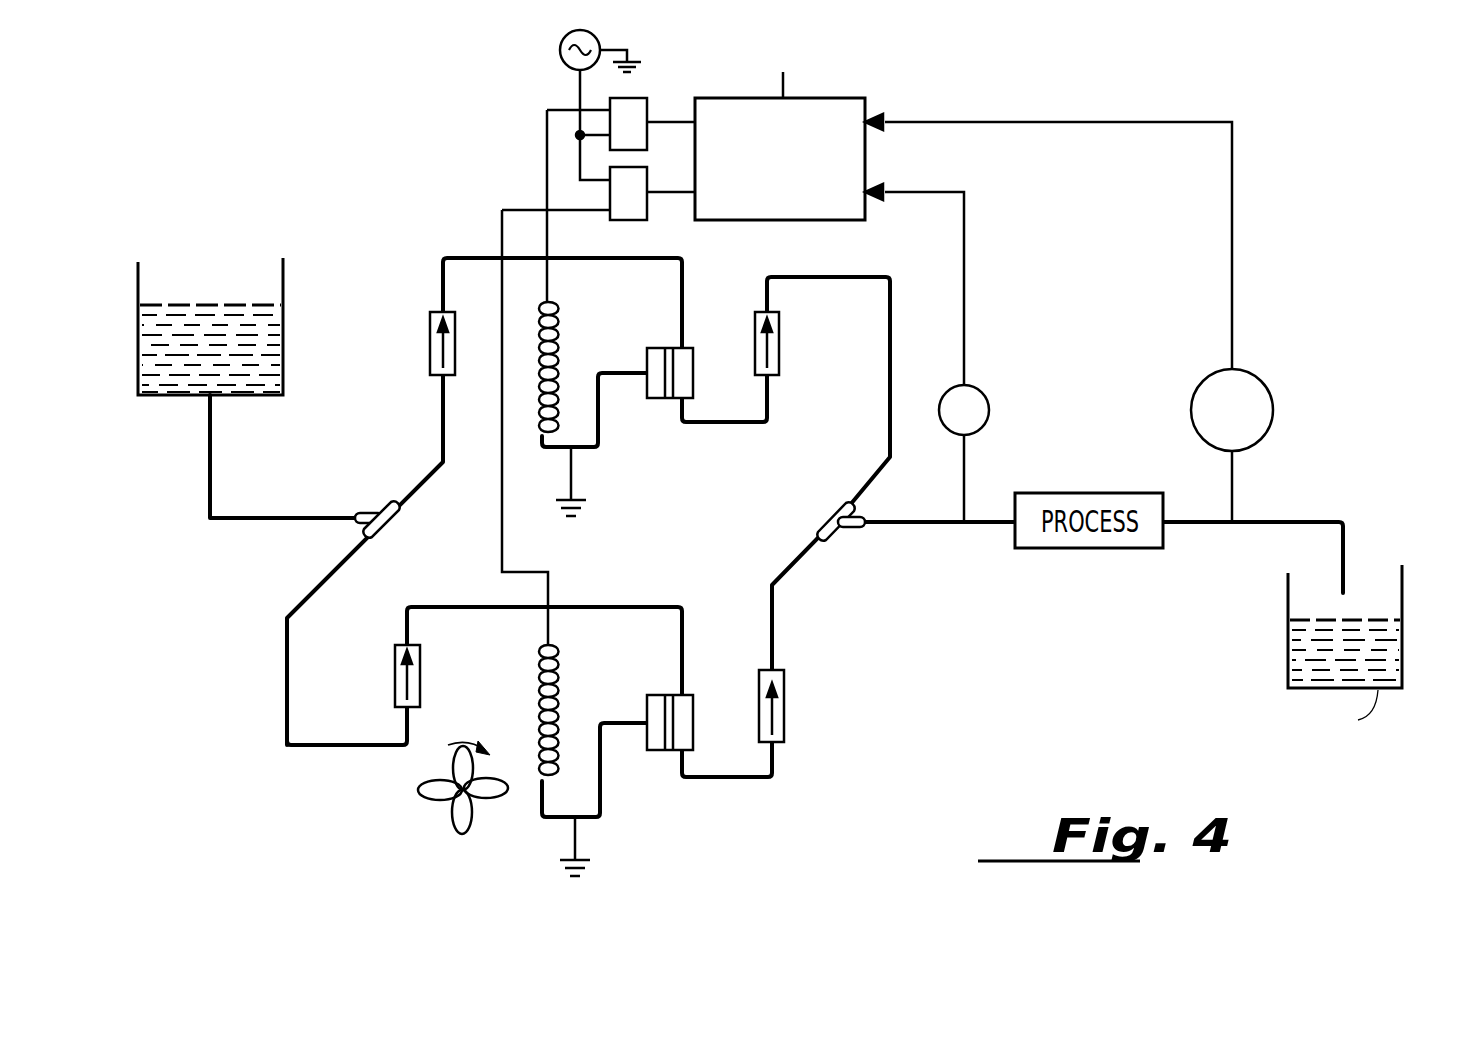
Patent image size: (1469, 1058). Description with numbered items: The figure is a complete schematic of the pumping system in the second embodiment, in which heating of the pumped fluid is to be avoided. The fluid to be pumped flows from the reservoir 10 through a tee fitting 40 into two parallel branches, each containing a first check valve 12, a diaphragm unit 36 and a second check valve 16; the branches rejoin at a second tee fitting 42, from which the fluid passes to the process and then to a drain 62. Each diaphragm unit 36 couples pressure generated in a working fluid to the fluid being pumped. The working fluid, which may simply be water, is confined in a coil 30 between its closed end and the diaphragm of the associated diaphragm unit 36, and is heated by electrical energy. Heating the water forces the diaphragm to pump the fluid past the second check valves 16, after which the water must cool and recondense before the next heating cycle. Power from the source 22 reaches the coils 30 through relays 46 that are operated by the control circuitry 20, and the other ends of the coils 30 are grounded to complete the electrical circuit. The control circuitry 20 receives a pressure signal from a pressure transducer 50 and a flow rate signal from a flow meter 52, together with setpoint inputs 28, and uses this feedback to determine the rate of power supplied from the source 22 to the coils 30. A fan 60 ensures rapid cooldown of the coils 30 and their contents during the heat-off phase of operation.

The reservoir 10 is at (135, 286).
The first check valves 12 is at (432, 348).
The second check valves 16 is at (776, 355).
The control circuitry 20 is at (853, 165).
The source 22 is at (558, 46).
The setpoint inputs 28 is at (840, 57).
The coils 30 is at (566, 352).
The diaphragm units 36 is at (685, 365).
The tee fitting 40 is at (390, 510).
The second tee fitting 42 is at (848, 530).
The relays 46 is at (630, 102).
The pressure transducer 50 is at (977, 405).
The flow meter 52 is at (1248, 383).
The fan 60 is at (440, 790).
The drain 62 is at (1288, 608).